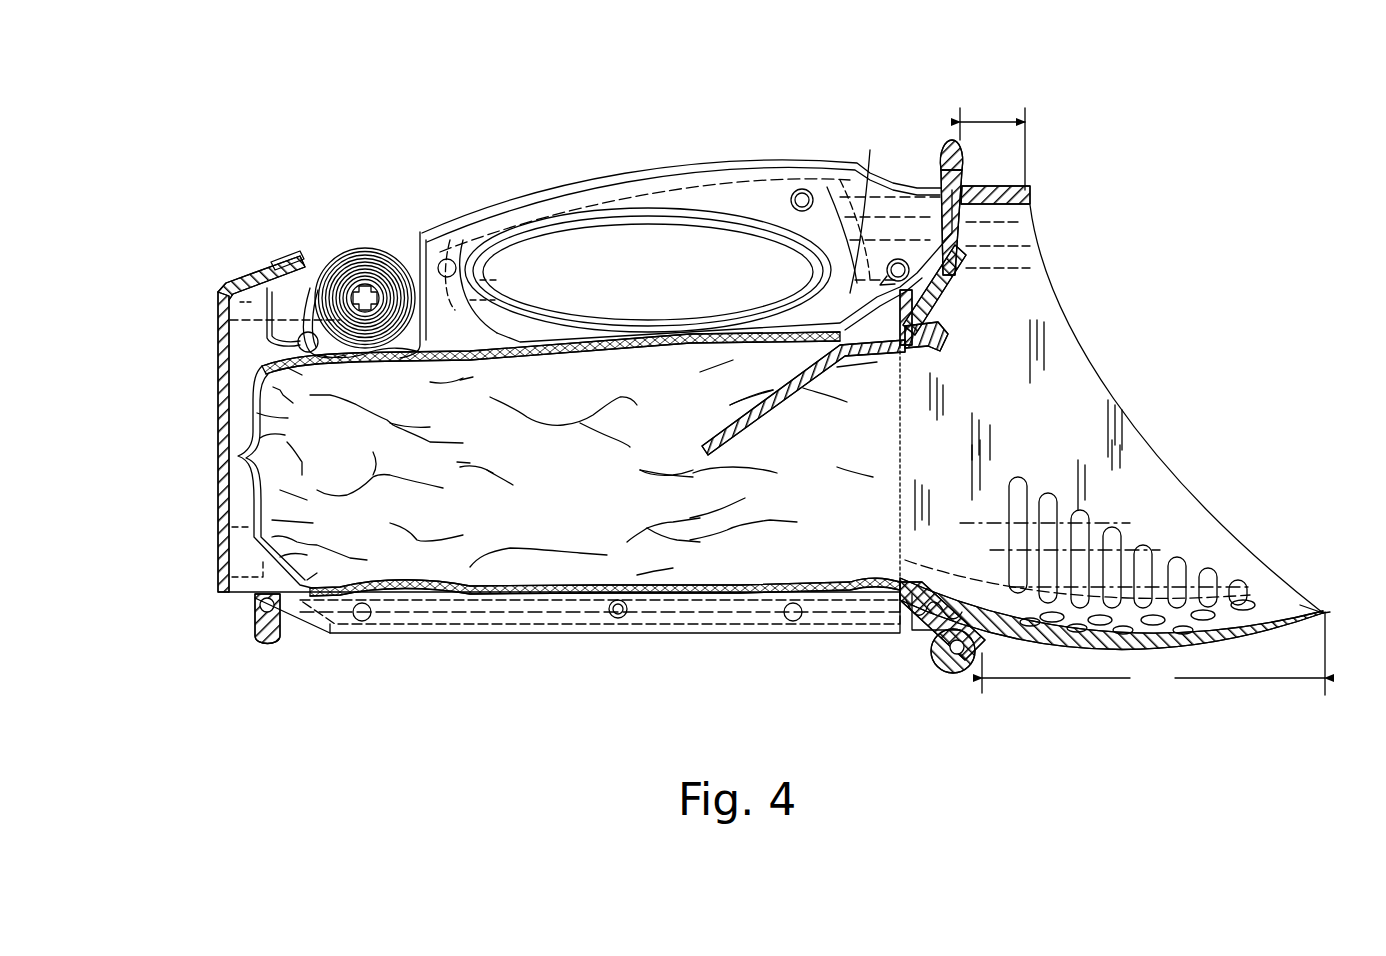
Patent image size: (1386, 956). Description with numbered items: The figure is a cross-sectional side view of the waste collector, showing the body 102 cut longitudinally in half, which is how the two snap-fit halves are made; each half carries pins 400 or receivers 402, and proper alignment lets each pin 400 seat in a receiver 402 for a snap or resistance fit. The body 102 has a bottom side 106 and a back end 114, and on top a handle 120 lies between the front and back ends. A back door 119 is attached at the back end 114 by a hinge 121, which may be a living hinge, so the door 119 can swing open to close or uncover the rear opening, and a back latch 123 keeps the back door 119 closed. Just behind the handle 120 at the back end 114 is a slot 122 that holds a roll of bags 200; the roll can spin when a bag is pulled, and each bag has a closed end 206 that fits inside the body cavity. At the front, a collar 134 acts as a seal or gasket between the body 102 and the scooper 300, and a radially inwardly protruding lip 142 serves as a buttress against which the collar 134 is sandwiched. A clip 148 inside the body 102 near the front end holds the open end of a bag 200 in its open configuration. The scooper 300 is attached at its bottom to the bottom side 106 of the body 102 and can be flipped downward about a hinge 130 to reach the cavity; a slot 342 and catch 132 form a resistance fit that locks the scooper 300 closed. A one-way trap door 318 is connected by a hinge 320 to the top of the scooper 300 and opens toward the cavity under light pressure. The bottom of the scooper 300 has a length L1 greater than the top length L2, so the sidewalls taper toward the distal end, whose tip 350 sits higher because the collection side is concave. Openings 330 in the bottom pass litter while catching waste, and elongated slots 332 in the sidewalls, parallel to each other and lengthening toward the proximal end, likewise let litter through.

The body 102 is at (525, 668).
The bottom side 106 is at (486, 640).
The back end 114 is at (190, 268).
The back door 119 is at (216, 366).
The handle 120 is at (608, 178).
The hinge 121 is at (252, 603).
The slot 122 is at (411, 245).
The back latch 123 is at (320, 258).
The hinge 130 is at (953, 673).
The catch 132 is at (946, 180).
The collar 134 is at (965, 262).
The lip 142 is at (926, 628).
The clip 148 is at (864, 209).
The bags 200 is at (362, 250).
The closed end 206 is at (252, 535).
The scooper 300 is at (1275, 688).
The trap door 318 is at (775, 405).
The hinge 320 is at (950, 324).
The openings 330 is at (1285, 605).
The elongated slots 332 is at (1022, 498).
The slot 342 is at (952, 138).
The tip 350 is at (1315, 611).
The pins 400 is at (452, 260).
The receivers 402 is at (800, 190).
The length of the bottom side of the scooper L1 is at (1153, 653).
The length of the top side of the scooper L2 is at (995, 124).